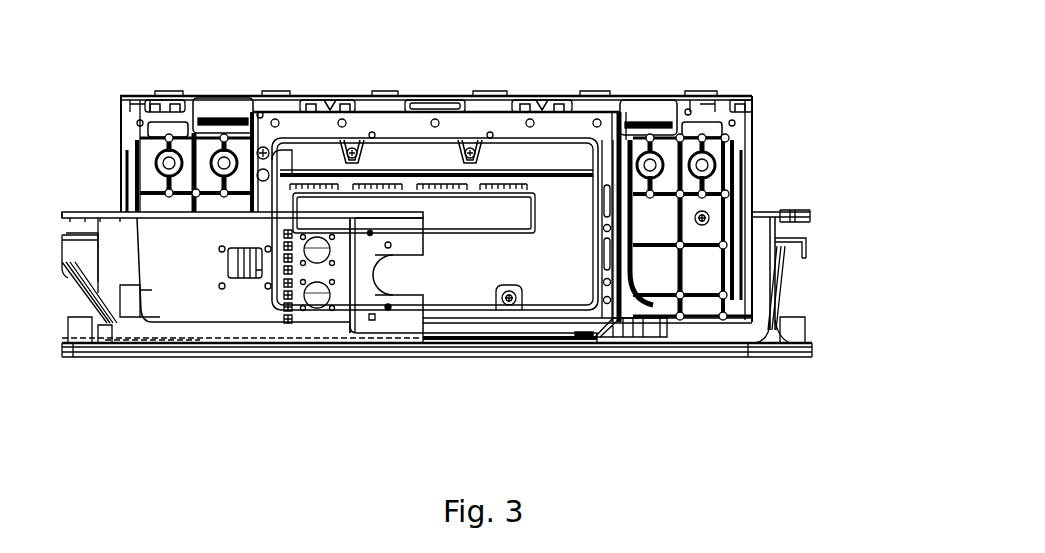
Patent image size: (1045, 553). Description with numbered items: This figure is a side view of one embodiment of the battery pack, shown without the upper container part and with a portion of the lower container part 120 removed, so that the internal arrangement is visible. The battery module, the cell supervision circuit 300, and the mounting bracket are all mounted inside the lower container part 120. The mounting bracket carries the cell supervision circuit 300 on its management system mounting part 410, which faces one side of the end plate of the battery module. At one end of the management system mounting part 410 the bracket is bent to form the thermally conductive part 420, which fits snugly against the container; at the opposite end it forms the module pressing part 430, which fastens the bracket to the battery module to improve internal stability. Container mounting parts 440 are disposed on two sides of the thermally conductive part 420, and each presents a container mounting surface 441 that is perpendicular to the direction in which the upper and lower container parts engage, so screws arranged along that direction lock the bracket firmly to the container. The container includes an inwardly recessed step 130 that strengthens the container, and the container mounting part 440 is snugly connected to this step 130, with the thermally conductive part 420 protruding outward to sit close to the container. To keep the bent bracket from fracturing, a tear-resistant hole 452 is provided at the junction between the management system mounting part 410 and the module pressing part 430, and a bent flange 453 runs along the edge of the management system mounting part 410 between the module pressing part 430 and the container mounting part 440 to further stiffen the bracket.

The lower container part 120 is at (238, 310).
The step 130 is at (650, 330).
The cell supervision circuit 300 is at (572, 177).
The management system mounting part 410 is at (492, 123).
The thermally conductive part 420 is at (535, 340).
The module pressing part 430 is at (312, 108).
The container mounting part 440 is at (650, 303).
The container mounting surface 441 is at (638, 330).
The tear-resistant hole 452 is at (350, 110).
The bent flange 453 is at (240, 153).